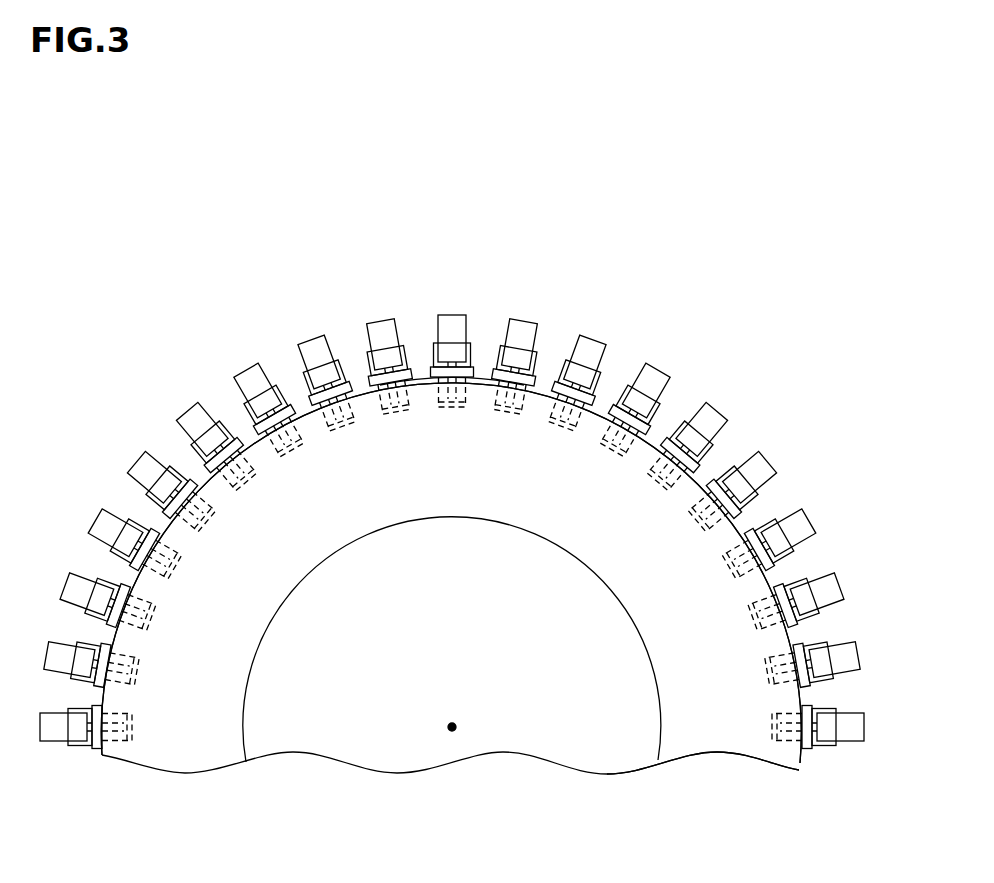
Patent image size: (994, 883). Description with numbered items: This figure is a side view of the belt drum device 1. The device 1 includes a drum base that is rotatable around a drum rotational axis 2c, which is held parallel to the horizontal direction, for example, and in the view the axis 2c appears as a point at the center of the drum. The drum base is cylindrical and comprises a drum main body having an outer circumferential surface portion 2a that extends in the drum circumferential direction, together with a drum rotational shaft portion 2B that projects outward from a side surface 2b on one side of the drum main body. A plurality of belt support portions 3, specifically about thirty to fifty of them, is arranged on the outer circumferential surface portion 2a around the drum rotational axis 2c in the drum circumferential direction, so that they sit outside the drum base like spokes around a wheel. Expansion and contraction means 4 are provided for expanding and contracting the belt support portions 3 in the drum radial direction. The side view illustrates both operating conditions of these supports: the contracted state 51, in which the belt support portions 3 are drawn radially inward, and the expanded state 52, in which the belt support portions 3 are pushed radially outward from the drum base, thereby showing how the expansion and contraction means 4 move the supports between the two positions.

The device 1 is at (701, 362).
The outer circumferential surface portion 2a is at (481, 377).
The side surface 2b is at (716, 705).
The drum rotational shaft portion 2B is at (658, 703).
The drum rotational axis 2c is at (452, 727).
The belt support portions 3 is at (452, 491).
The expansion and contraction means 4 is at (287, 446).
The contracted state 51 is at (140, 460).
The expanded state 52 is at (653, 350).